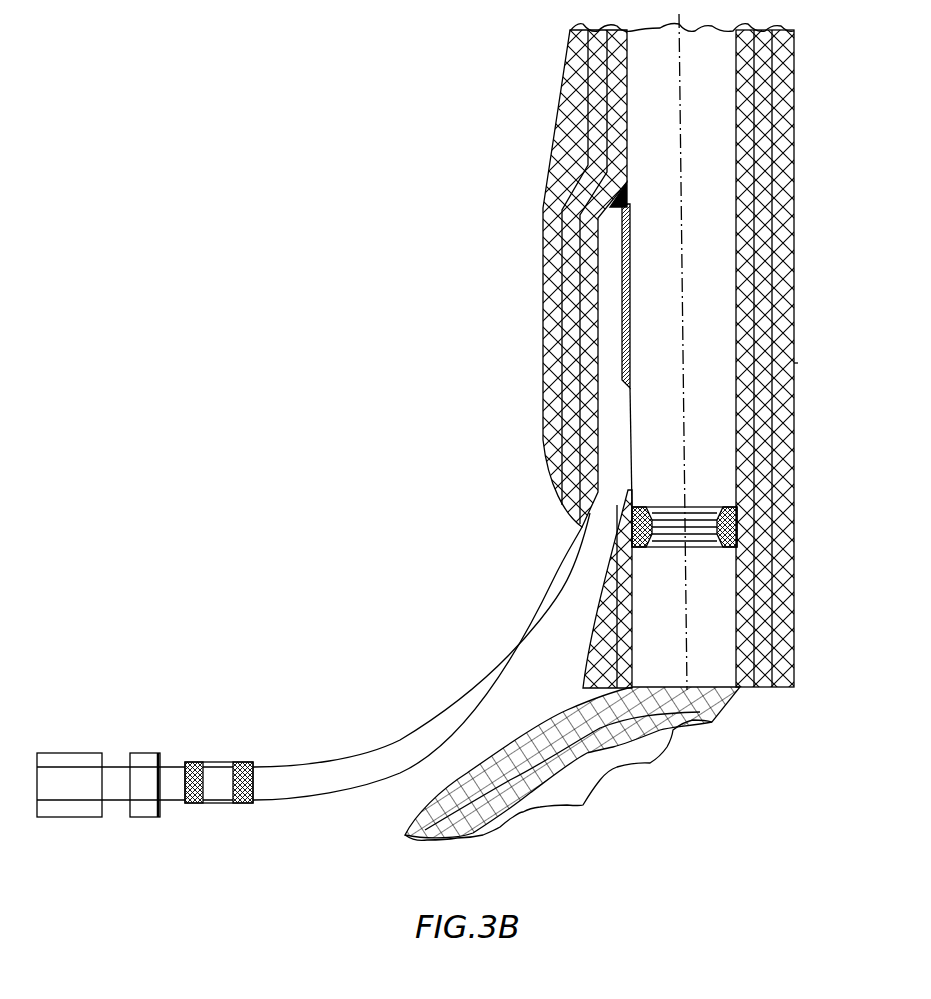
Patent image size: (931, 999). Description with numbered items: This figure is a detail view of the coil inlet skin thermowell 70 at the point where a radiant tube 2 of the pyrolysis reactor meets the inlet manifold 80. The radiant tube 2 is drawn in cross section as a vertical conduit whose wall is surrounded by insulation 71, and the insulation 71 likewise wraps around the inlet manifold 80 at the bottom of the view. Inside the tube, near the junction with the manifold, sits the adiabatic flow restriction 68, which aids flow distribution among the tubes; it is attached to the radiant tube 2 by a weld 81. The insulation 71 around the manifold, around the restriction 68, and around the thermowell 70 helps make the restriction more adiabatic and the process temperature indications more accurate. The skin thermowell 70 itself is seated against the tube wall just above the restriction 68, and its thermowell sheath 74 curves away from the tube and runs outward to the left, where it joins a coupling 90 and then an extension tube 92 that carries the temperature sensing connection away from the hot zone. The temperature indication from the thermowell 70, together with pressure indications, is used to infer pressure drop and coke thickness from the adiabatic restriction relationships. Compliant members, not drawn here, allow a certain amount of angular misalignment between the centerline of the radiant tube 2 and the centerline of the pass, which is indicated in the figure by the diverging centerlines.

The radiant tube 2 is at (720, 180).
The adiabatic flow restriction 68 is at (656, 517).
The skin thermowell 70 is at (612, 250).
The insulation 71 is at (562, 295).
The thermowell sheath 74 is at (400, 737).
The inlet manifold 80 is at (700, 777).
The weld 81 is at (632, 522).
The coupling 90 is at (218, 760).
The extension tube 92 is at (170, 800).